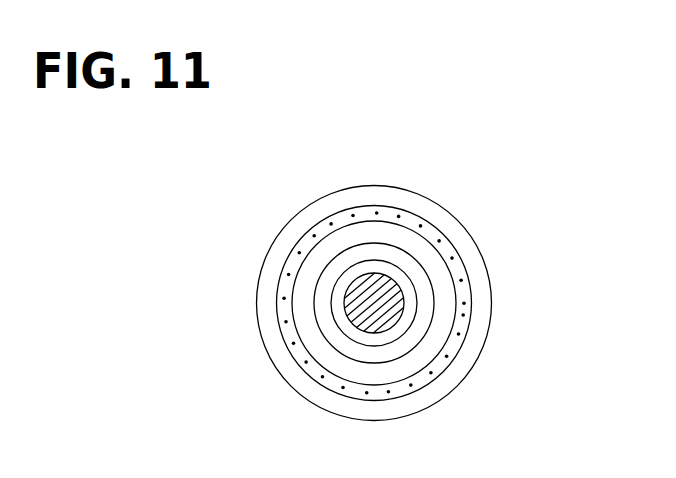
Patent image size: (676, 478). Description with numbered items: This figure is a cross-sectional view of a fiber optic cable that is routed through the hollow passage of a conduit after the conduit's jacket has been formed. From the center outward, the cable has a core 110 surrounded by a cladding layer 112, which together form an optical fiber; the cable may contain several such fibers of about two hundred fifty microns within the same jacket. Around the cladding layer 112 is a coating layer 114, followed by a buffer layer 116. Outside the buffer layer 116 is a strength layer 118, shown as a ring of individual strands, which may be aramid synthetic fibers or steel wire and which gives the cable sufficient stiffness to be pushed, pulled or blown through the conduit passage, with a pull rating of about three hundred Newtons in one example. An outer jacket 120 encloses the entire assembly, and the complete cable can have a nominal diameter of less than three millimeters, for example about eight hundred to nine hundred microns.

The core 110 is at (387, 307).
The cladding layer 112 is at (408, 293).
The coating layer 114 is at (408, 268).
The buffer layer 116 is at (408, 245).
The strength layer 118 is at (390, 215).
The outer jacket 120 is at (427, 393).